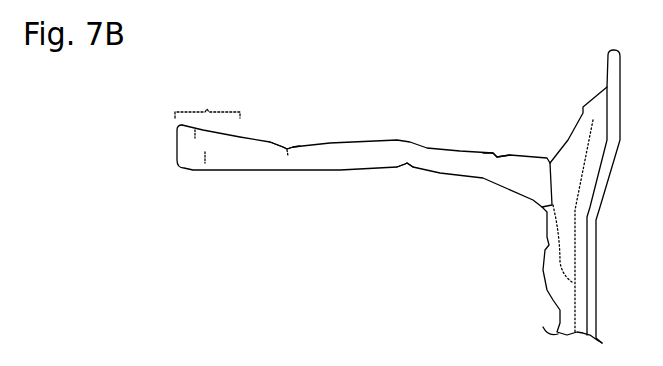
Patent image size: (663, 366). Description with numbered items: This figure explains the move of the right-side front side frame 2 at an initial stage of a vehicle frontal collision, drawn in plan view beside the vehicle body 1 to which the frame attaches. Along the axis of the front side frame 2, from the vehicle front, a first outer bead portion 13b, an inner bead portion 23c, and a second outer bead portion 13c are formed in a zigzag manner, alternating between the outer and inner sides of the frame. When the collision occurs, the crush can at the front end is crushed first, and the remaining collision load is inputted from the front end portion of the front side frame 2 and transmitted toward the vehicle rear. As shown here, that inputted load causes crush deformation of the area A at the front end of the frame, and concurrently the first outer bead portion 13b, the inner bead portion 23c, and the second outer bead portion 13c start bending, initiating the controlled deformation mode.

The pillar panel 1 is at (553, 292).
The front side frame 2 is at (222, 182).
The first outer bead portion 13b is at (287, 148).
The second outer bead portion 13c is at (498, 157).
The inner bead portion 23c is at (405, 165).
The area A is at (207, 101).